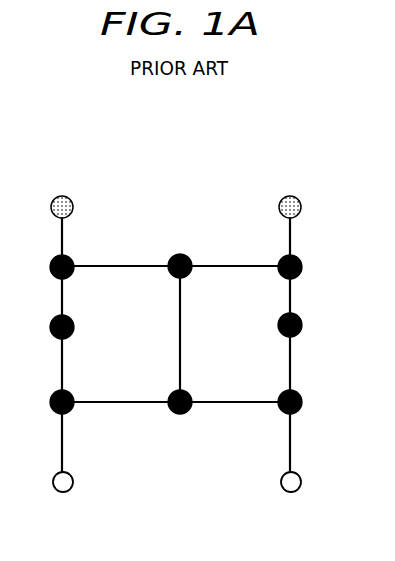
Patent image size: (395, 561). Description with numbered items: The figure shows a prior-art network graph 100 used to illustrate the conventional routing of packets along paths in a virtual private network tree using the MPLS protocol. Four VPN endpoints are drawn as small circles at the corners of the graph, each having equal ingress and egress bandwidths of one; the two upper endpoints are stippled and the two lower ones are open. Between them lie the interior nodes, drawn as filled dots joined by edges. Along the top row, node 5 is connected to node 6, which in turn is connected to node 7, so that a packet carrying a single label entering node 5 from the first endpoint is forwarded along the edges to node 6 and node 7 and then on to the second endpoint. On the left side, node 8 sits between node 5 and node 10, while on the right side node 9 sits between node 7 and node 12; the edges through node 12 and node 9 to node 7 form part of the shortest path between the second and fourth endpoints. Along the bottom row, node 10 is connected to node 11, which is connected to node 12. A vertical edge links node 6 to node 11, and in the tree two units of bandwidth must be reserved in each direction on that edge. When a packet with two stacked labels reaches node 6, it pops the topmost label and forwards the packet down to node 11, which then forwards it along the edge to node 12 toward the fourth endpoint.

The network graph 100 is at (290, 237).
The node 5 is at (52, 268).
The node 6 is at (180, 249).
The node 7 is at (301, 268).
The node 8 is at (51, 328).
The node 9 is at (301, 327).
The node 10 is at (45, 404).
The node 11 is at (180, 417).
The node 12 is at (306, 404).